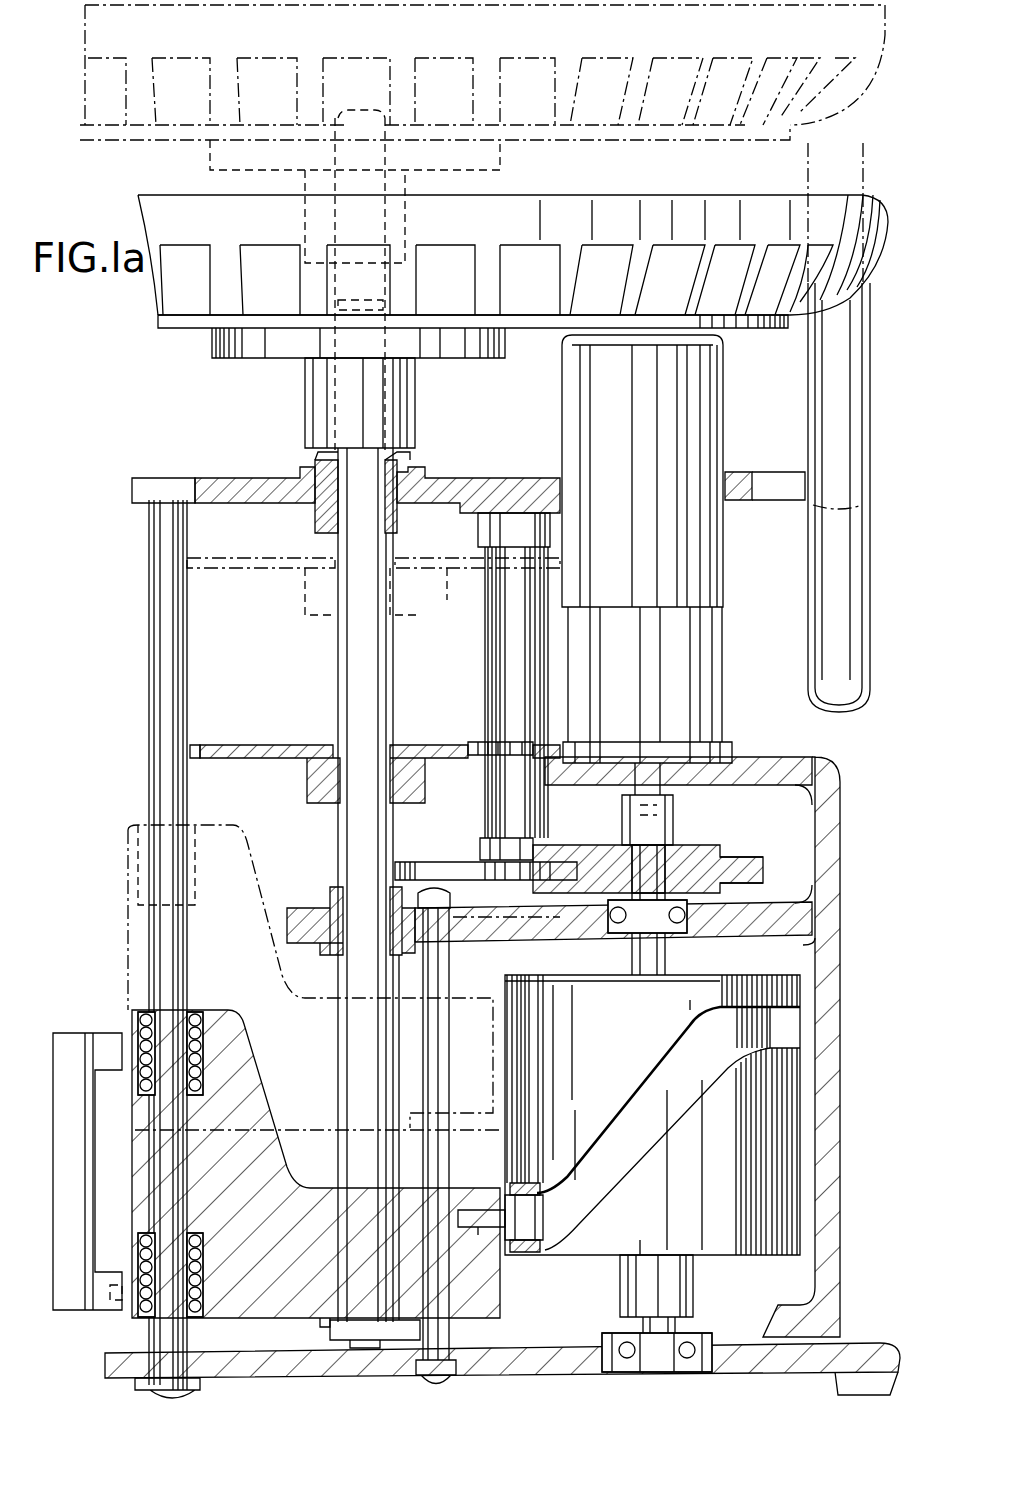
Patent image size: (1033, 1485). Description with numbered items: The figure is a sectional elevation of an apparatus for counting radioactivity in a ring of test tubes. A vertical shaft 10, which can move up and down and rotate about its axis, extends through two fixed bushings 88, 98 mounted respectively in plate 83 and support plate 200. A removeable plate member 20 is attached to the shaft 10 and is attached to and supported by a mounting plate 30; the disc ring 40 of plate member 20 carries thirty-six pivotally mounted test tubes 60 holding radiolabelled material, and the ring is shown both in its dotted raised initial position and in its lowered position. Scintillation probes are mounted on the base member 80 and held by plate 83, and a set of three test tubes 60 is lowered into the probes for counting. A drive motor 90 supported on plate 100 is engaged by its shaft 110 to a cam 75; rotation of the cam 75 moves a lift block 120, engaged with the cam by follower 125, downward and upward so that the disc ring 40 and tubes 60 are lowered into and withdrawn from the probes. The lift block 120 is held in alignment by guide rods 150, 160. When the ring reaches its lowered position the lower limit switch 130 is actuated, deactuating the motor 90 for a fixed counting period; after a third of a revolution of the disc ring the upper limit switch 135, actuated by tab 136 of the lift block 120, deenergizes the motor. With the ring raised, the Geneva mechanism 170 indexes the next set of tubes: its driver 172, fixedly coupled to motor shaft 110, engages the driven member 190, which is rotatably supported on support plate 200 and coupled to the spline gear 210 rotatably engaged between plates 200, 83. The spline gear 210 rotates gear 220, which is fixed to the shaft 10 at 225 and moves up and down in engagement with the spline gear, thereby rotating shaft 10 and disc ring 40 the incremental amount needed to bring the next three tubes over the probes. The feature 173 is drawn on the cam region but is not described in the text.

The shaft 10 is at (355, 538).
The plate member 20 is at (267, 320).
The mounting plate 30 is at (318, 393).
The disc ring 40 is at (888, 32).
The test tubes 60 is at (865, 150).
The cam 75 is at (760, 992).
The base member 80 is at (730, 1362).
The plate 83 is at (245, 478).
The bushing 88 is at (405, 462).
The drive motor 90 is at (712, 396).
The bushing 98 is at (330, 885).
The plate 100 is at (790, 770).
The drive motor shaft 110 is at (655, 875).
The lift block 120 is at (130, 942).
The follower 125 is at (520, 1240).
The lower limit switch 130 is at (108, 1300).
The upper limit switch 135 is at (105, 1035).
The tab 136 is at (130, 1262).
The guide rod 150 is at (165, 975).
The guide rod 160 is at (458, 1153).
The Geneva mechanism 170 is at (579, 837).
The driver 172 is at (710, 870).
The notch 173 is at (789, 1025).
The driven member 190 is at (435, 862).
The support plate 200 is at (775, 920).
The spline gear 210 is at (495, 655).
The gear 220 is at (446, 580).
The fixing location of gear to shaft 225 is at (300, 612).